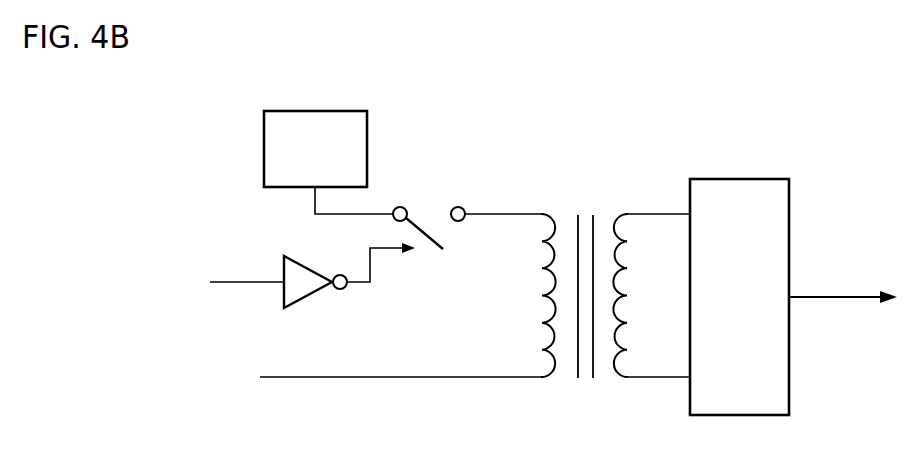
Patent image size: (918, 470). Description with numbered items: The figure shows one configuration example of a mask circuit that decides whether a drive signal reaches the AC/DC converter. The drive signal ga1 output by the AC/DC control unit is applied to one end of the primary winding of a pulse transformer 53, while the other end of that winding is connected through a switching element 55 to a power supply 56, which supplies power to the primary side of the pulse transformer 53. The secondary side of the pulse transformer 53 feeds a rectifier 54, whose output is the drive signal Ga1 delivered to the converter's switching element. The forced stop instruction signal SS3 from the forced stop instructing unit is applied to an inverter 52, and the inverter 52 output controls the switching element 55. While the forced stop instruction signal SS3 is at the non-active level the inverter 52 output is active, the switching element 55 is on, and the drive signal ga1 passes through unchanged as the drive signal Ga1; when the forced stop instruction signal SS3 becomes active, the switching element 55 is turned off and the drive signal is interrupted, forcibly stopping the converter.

The inverter 52 is at (308, 300).
The pulse transformer 53 is at (561, 383).
The rectifier 54 is at (738, 179).
The switching element 55 is at (432, 212).
The power supply 56 is at (315, 111).
The forced stop instruction signal SS3 is at (220, 283).
The drive signal ga1 is at (315, 378).
The drive signal Ga1 is at (835, 296).